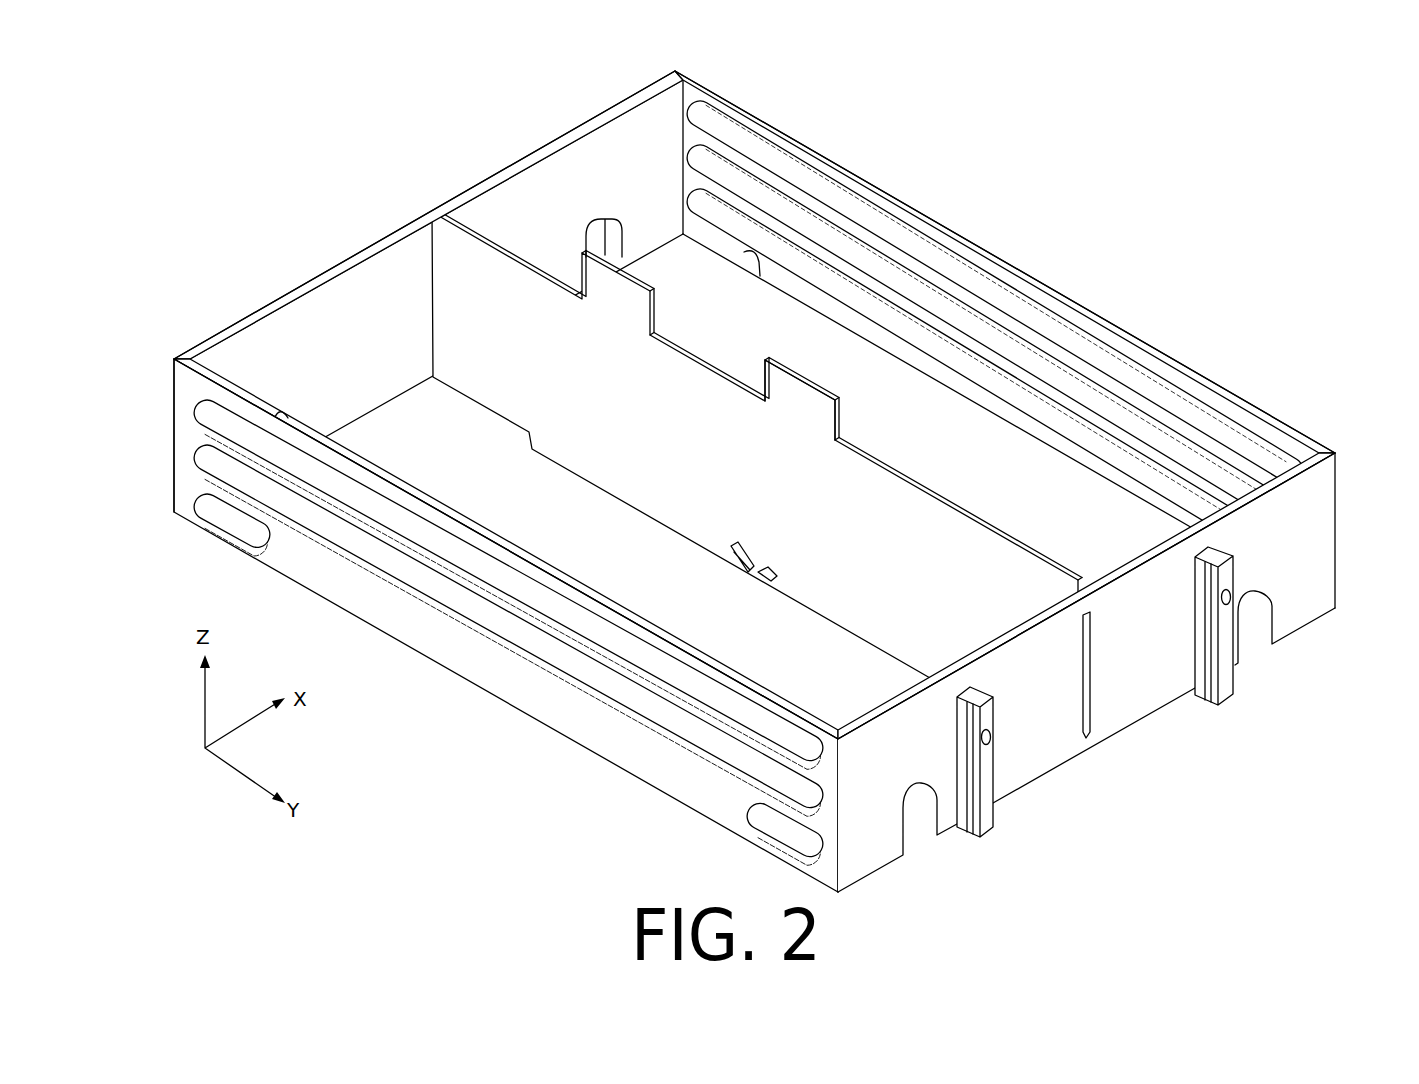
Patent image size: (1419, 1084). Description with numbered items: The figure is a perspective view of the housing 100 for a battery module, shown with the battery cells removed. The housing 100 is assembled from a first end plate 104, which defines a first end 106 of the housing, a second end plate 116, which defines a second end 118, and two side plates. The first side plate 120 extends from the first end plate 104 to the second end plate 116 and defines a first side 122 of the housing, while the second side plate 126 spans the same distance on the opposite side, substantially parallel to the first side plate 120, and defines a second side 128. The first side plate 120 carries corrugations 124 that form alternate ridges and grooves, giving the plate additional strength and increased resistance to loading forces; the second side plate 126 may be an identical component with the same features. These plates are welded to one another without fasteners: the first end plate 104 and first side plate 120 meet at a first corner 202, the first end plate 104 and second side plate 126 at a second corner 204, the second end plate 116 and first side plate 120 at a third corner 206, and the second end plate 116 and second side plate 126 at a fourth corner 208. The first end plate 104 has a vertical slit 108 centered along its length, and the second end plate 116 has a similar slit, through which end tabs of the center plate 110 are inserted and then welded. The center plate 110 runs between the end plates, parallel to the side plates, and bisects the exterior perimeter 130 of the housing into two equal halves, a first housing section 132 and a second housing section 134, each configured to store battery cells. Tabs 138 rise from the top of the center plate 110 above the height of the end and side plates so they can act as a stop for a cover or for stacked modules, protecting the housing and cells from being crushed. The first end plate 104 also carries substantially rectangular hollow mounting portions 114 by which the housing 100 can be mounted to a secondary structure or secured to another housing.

The housing 100 is at (1170, 128).
The first end plate 104 is at (1178, 680).
The first end 106 is at (1066, 795).
The slit 108 is at (1090, 735).
The center plate 110 is at (940, 527).
The mounting portions 114 is at (988, 808).
The second end plate 116 is at (238, 318).
The second end 118 is at (427, 193).
The first side plate 120 is at (594, 748).
The first side 122 is at (481, 708).
The corrugations 124 is at (693, 767).
The second side plate 126 is at (1262, 405).
The second side 128 is at (1069, 252).
The exterior perimeter 130 is at (197, 558).
The first housing section 132 is at (348, 308).
The second housing section 134 is at (597, 152).
The tabs 138 is at (822, 405).
The first corner 202 is at (840, 866).
The second corner 204 is at (1336, 450).
The third corner 206 is at (174, 424).
The fourth corner 208 is at (675, 69).